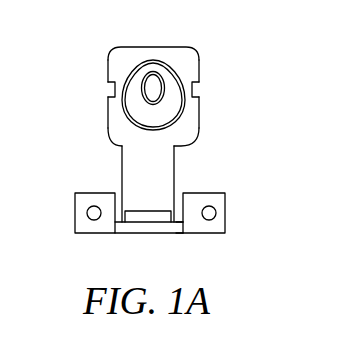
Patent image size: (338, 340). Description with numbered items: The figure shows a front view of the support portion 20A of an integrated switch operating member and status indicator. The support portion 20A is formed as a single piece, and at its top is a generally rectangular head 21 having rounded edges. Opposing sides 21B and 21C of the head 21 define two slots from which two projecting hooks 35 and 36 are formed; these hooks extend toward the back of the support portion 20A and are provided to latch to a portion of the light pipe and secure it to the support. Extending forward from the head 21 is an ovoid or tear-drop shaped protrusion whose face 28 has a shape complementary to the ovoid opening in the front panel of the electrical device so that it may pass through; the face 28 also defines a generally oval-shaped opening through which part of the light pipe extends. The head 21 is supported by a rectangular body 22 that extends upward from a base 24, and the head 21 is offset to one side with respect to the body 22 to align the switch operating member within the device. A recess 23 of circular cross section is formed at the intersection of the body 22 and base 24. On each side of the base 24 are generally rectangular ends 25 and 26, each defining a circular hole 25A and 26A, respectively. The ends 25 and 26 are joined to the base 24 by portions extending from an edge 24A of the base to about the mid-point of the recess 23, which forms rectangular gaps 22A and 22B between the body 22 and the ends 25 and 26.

The support portion 20A is at (197, 31).
The head 21 is at (188, 130).
The side 21B is at (108, 113).
The side 21C is at (200, 118).
The body 22 is at (175, 178).
The gap 22A is at (176, 196).
The gap 22B is at (120, 198).
The recess 23 is at (135, 222).
The base 24 is at (167, 235).
The edge 24A is at (175, 236).
The end 25 is at (222, 235).
The hole 25A is at (213, 217).
The end 26 is at (86, 235).
The hole 26A is at (89, 217).
The face 28 is at (138, 92).
The hook 35 is at (196, 88).
The hook 36 is at (111, 90).